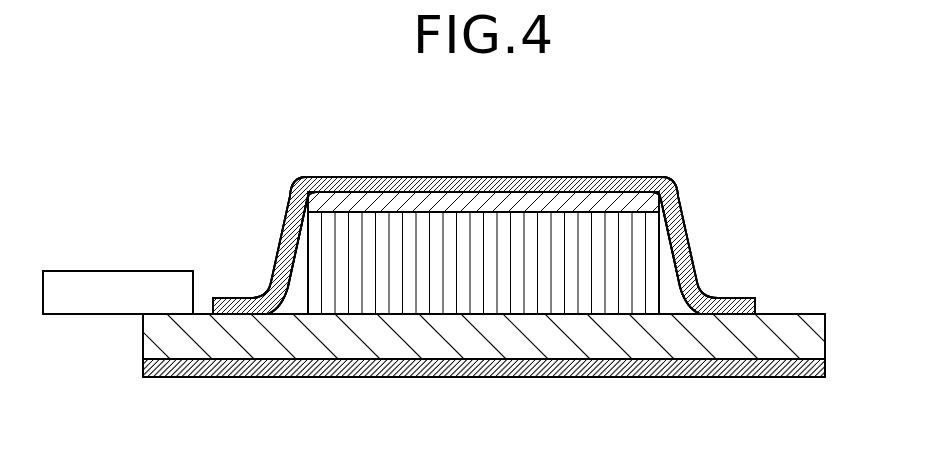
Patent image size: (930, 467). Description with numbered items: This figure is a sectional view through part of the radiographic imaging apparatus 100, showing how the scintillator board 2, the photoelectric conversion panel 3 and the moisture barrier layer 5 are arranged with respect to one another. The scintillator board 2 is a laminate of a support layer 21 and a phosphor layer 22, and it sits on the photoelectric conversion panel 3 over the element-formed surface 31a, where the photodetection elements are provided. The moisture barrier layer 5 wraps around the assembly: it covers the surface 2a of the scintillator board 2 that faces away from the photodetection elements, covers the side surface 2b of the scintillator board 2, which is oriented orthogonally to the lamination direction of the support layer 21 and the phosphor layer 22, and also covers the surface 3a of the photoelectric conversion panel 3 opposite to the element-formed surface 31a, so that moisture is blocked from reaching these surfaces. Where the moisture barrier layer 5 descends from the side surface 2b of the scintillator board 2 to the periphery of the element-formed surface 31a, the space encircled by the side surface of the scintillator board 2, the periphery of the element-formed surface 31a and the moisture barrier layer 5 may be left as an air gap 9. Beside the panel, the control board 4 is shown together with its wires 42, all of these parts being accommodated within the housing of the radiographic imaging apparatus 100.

The radiographic imaging apparatus 100 is at (332, 111).
The scintillator board 2 is at (766, 125).
The surface of the scintillator board 2a is at (550, 195).
The side surface of the scintillator board 2b is at (660, 277).
The support layer 21 is at (657, 203).
The phosphor layer 22 is at (672, 238).
The photoelectric conversion panel 3 is at (838, 332).
The surface of the photoelectric conversion panel 3a is at (559, 343).
The element-formed surface 31a is at (780, 314).
The control board 4 is at (118, 261).
The wires 42 is at (110, 273).
The moisture barrier layer 5 is at (452, 183).
The air gap 9 is at (296, 305).